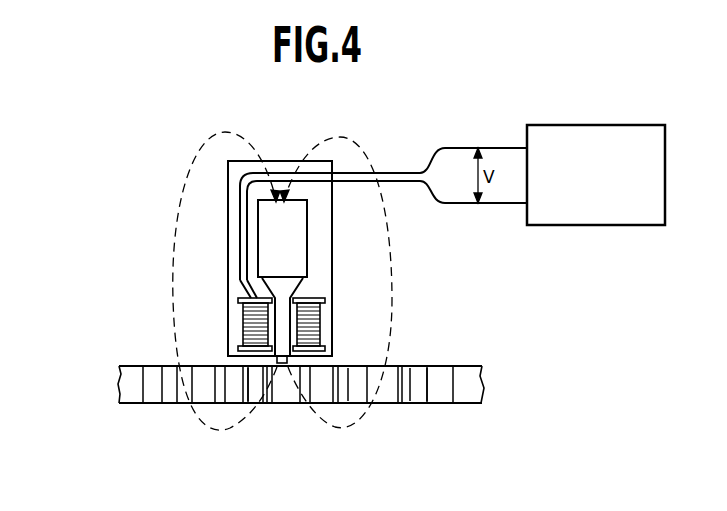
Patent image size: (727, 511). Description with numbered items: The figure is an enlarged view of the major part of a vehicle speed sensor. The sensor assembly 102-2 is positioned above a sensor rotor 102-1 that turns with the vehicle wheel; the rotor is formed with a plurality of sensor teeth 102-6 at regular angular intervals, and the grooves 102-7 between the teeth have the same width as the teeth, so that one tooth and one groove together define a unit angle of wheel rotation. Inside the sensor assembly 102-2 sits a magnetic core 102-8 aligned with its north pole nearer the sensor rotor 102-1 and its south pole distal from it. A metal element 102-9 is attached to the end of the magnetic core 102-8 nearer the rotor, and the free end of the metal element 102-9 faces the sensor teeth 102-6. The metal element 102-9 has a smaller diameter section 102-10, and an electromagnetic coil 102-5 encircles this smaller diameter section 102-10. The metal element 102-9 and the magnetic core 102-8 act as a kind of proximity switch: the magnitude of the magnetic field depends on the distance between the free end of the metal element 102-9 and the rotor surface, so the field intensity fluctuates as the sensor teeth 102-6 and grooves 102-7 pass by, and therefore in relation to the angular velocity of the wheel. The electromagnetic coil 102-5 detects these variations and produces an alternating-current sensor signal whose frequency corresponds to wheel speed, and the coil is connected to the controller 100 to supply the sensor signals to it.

The controller 100 is at (593, 125).
The sensor rotor 102-1 is at (138, 382).
The sensor assembly 102-2 is at (173, 170).
The electromagnetic coil 102-5 is at (243, 318).
The sensor teeth 102-6 is at (450, 407).
The grooves 102-7 is at (254, 393).
The magnetic core 102-8 is at (300, 233).
The metal element 102-9 is at (287, 287).
The smaller diameter section 102-10 is at (283, 343).